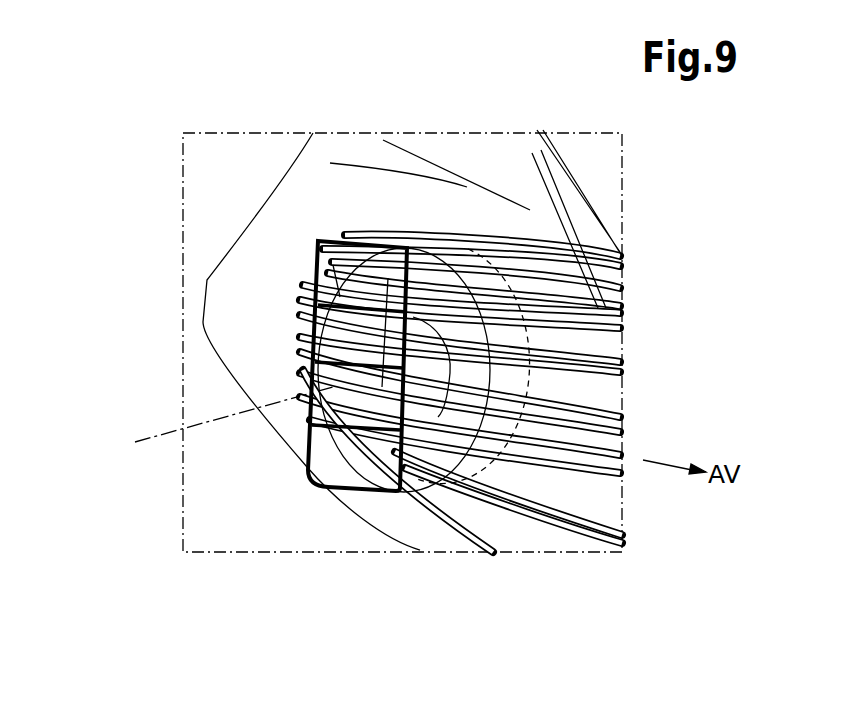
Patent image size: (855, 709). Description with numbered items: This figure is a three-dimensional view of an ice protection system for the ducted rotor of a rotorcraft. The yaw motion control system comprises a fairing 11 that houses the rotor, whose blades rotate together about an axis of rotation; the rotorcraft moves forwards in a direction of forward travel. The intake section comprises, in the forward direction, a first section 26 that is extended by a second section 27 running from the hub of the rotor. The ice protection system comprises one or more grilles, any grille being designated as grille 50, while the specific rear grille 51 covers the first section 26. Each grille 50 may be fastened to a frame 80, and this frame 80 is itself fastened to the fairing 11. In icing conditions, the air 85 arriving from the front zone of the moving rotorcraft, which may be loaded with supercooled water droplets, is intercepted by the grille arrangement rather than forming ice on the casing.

The fairing 11 is at (488, 152).
The first section 26 is at (272, 336).
The second section 27 is at (376, 504).
The grille 50 is at (366, 393).
The rear grille 51 is at (368, 420).
The frame 80 is at (374, 245).
The air 85 is at (597, 510).